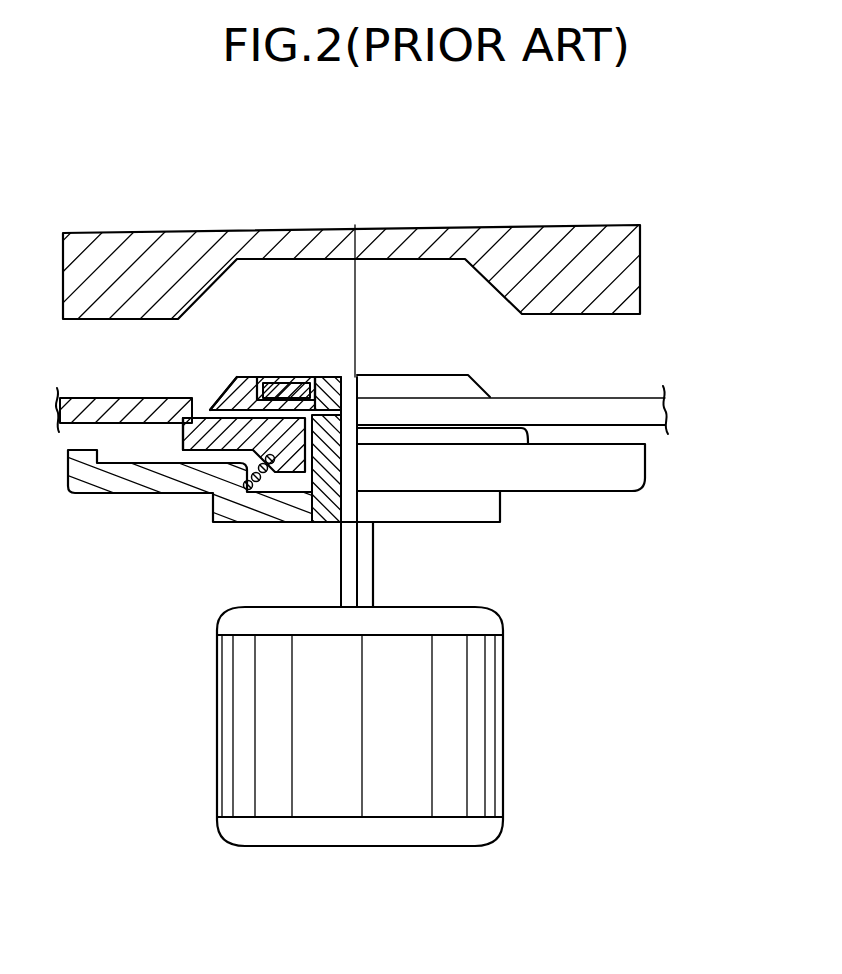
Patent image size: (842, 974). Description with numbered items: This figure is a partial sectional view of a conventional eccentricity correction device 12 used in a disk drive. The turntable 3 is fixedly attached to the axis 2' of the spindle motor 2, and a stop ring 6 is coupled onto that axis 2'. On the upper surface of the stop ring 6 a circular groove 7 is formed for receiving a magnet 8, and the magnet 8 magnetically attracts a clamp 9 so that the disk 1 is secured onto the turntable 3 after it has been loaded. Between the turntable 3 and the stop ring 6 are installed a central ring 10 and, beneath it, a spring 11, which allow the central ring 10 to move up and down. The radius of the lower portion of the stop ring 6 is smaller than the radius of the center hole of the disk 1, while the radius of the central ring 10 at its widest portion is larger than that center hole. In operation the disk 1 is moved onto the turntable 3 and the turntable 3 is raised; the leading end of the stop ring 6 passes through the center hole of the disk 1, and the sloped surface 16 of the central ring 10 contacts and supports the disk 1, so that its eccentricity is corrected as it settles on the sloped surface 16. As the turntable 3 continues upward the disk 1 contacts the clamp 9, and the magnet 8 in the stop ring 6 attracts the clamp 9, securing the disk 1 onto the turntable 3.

The disk 1 is at (655, 412).
The spindle motor 2 is at (390, 726).
The axis 2' is at (418, 564).
The turntable 3 is at (612, 485).
The stop ring 6 is at (236, 380).
The circular groove 7 is at (316, 373).
The magnet 8 is at (273, 388).
The clamp 9 is at (585, 238).
The central ring 10 is at (197, 438).
The spring 11 is at (262, 482).
The eccentricity correction device 12 is at (207, 388).
The sloped surface 16 is at (183, 432).